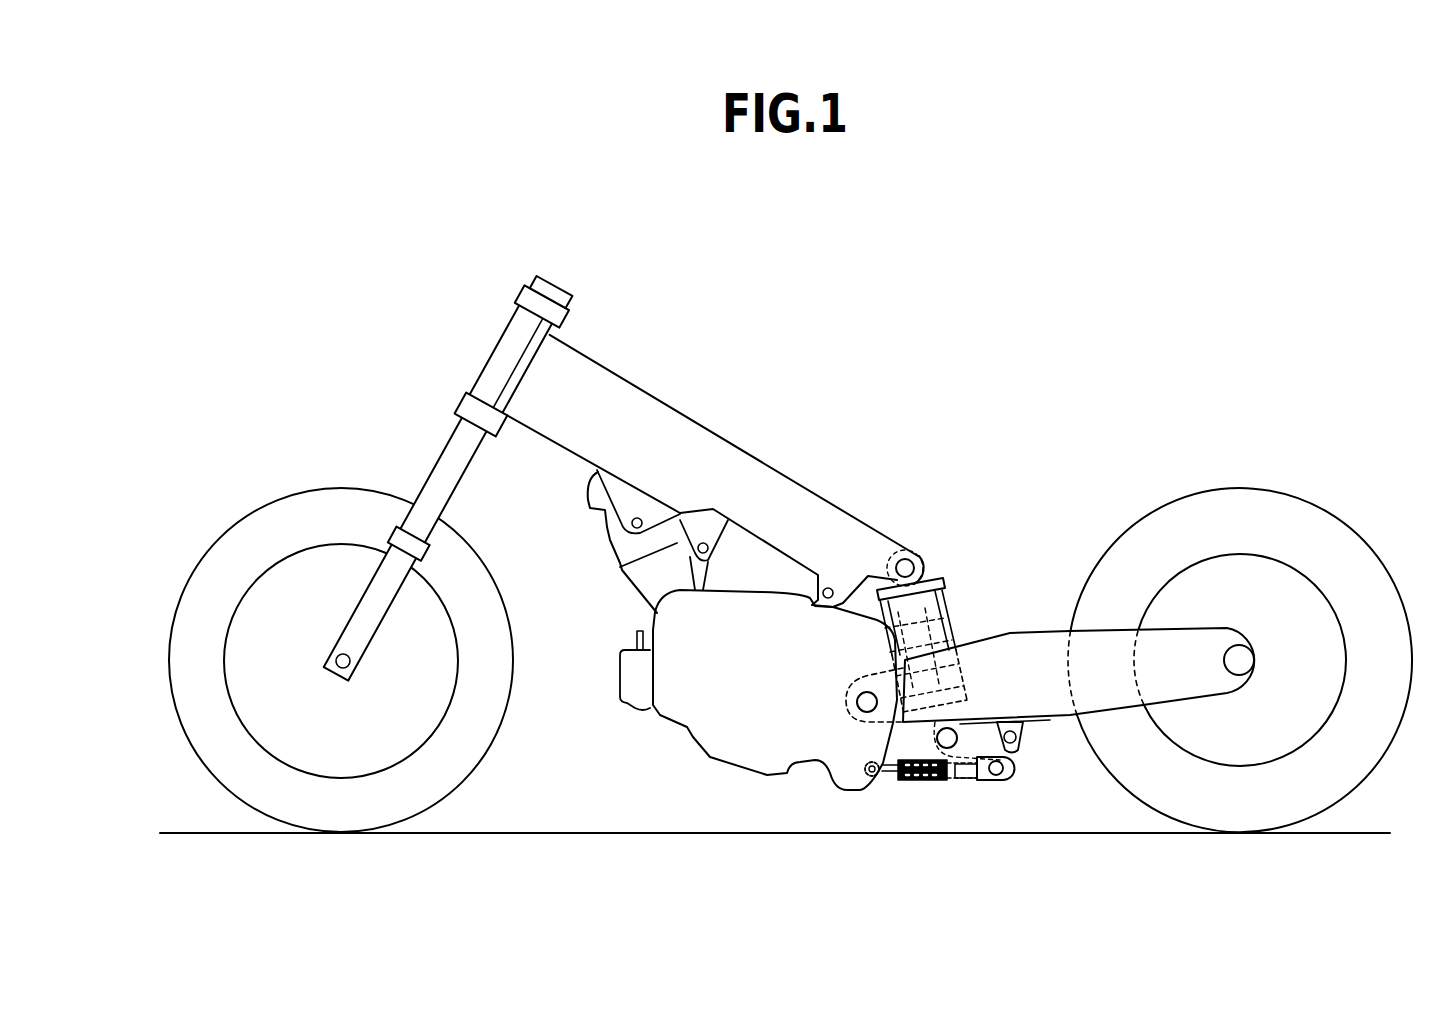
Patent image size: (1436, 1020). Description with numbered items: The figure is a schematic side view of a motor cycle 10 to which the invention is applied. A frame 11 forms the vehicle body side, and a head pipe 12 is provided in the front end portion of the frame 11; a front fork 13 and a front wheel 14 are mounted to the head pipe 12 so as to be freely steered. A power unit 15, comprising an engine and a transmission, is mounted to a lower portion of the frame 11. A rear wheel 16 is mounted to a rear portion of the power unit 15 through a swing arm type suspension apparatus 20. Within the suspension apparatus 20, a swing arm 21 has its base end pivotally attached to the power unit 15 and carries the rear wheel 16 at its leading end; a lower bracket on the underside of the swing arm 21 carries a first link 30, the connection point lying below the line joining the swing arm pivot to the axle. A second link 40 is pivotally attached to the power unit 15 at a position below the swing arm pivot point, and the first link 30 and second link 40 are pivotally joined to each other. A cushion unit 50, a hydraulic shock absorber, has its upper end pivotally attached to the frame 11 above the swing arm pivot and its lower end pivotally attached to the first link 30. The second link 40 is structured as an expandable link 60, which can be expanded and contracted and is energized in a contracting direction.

The motor cycle 10 is at (352, 297).
The frame 11 is at (722, 455).
The head pipe 12 is at (497, 367).
The front fork 13 is at (443, 460).
The front wheel 14 is at (305, 487).
The power unit 15 is at (700, 713).
The rear wheel 16 is at (1240, 487).
The suspension apparatus 20 is at (1010, 618).
The swing arm 21 is at (1105, 648).
The first link 30 is at (1005, 748).
The second link 40 is at (920, 782).
The cushion unit 50 is at (935, 578).
The expandable link 60 is at (955, 782).